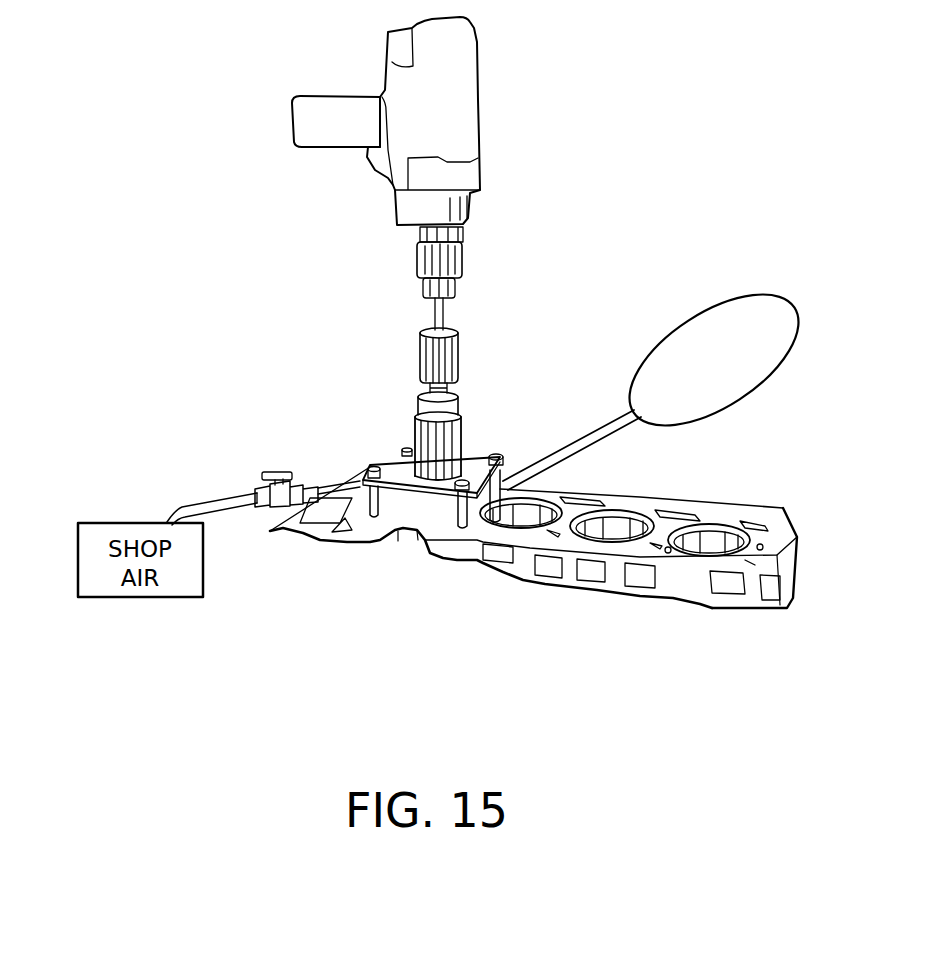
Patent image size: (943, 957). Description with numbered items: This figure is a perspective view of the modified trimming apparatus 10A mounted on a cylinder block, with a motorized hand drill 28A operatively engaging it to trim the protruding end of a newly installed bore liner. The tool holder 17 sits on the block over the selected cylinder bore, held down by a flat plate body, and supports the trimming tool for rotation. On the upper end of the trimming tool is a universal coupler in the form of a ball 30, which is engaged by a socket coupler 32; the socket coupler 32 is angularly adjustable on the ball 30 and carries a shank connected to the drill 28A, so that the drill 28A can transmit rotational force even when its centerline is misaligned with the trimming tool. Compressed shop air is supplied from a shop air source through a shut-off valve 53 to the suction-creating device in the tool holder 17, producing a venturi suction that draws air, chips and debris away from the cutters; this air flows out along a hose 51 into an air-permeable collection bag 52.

The modified trimming apparatus 10A is at (520, 352).
The tool holder 17 is at (472, 445).
The motorized hand drill 28A is at (480, 103).
The ball 30 is at (447, 390).
The socket coupler 32 is at (458, 345).
The hose 51 is at (578, 453).
The air-permeable collection bag 52 is at (730, 405).
The shut-off valve 53 is at (280, 472).